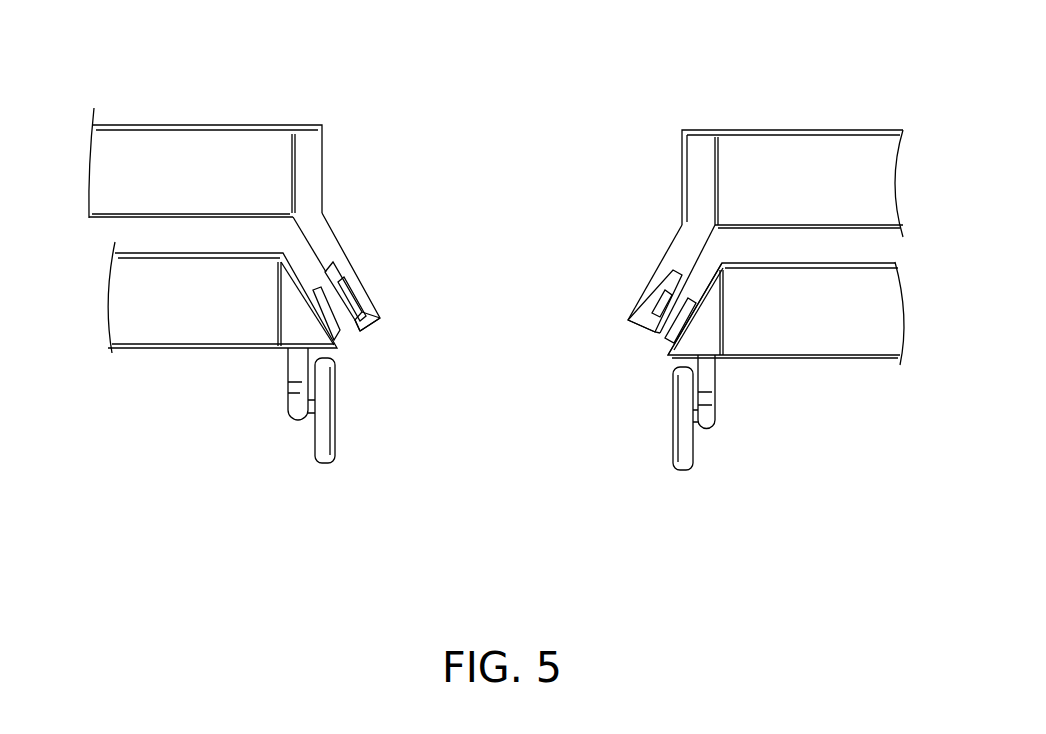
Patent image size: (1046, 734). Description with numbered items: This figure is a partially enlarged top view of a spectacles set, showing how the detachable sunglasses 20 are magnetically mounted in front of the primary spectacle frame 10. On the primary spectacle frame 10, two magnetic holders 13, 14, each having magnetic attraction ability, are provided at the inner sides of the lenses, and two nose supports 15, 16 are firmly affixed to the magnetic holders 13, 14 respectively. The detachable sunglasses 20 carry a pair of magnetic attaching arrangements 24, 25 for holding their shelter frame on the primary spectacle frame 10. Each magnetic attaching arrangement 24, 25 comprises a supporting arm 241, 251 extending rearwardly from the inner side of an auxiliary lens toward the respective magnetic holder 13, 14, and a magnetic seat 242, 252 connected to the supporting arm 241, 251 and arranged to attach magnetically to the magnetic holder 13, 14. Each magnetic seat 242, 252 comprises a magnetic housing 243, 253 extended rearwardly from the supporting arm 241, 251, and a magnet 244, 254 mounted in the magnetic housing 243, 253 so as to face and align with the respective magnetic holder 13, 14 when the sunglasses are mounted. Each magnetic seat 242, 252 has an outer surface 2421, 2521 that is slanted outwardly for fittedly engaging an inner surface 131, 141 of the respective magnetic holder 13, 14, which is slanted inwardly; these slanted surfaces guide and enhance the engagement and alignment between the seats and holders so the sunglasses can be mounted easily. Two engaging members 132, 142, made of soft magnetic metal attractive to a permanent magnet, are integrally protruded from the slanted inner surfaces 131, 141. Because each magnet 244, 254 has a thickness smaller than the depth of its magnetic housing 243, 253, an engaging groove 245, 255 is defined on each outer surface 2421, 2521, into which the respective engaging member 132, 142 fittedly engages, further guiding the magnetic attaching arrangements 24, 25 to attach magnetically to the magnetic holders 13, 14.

The primary spectacle frame 10 is at (725, 508).
The magnetic holder 13 is at (283, 282).
The inner surface 131 is at (302, 287).
The engaging member 132 is at (365, 430).
The magnetic holder 14 is at (715, 288).
The inner surface 141 is at (713, 287).
The engaging member 142 is at (700, 292).
The nose support 15 is at (323, 447).
The nose support 16 is at (683, 457).
The detachable sunglasses 20 is at (665, 67).
The magnetic attaching arrangement 24 is at (418, 162).
The supporting arm 241 is at (313, 155).
The magnetic seat 242 is at (327, 237).
The outer surface 2421 is at (352, 323).
The magnetic housing 243 is at (363, 327).
The magnet 244 is at (343, 273).
The engaging groove 245 is at (347, 293).
The magnetic attaching arrangement 25 is at (557, 213).
The supporting arm 251 is at (690, 163).
The magnetic seat 252 is at (683, 243).
The outer surface 2521 is at (655, 335).
The magnetic housing 253 is at (665, 338).
The magnet 254 is at (665, 300).
The engaging groove 255 is at (655, 297).